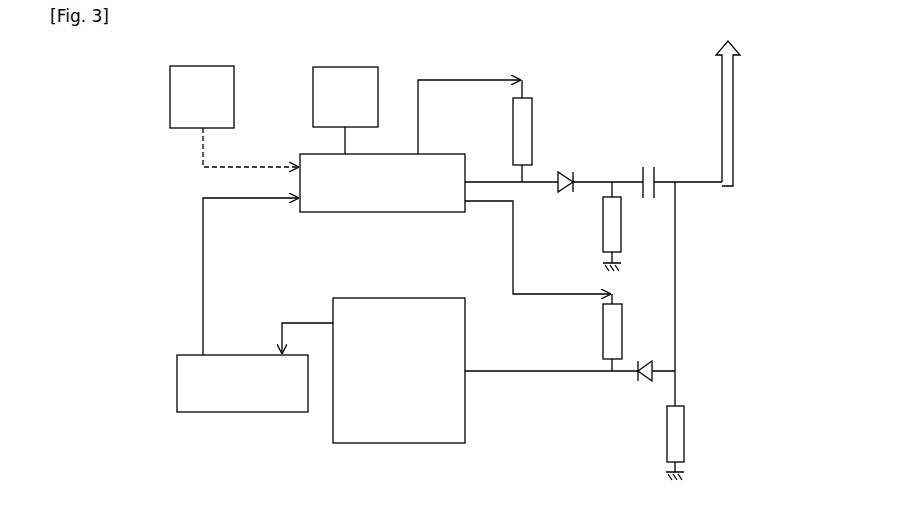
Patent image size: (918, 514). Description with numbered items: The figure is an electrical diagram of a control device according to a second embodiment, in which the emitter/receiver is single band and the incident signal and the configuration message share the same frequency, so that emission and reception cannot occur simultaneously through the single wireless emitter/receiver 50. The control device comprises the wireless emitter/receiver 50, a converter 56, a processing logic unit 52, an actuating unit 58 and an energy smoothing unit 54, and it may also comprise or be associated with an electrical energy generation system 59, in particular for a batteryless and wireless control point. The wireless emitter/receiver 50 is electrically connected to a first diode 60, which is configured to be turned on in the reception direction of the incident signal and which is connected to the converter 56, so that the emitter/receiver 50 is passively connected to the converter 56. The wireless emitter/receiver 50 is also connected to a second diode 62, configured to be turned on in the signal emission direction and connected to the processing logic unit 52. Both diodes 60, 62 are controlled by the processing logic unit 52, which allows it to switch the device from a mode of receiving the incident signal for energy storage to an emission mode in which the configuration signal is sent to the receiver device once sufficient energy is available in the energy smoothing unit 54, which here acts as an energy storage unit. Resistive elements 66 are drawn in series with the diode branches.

The wireless emitter/receiver 50 is at (722, 124).
The processing logic unit 52 is at (300, 153).
The energy smoothing unit 54 is at (177, 390).
The converter 56 is at (465, 427).
The actuating unit 58 is at (345, 97).
The electrical energy generation system 59 is at (202, 97).
The first diode 60 is at (640, 361).
The second diode 62 is at (570, 175).
The resistor 66 is at (532, 118).